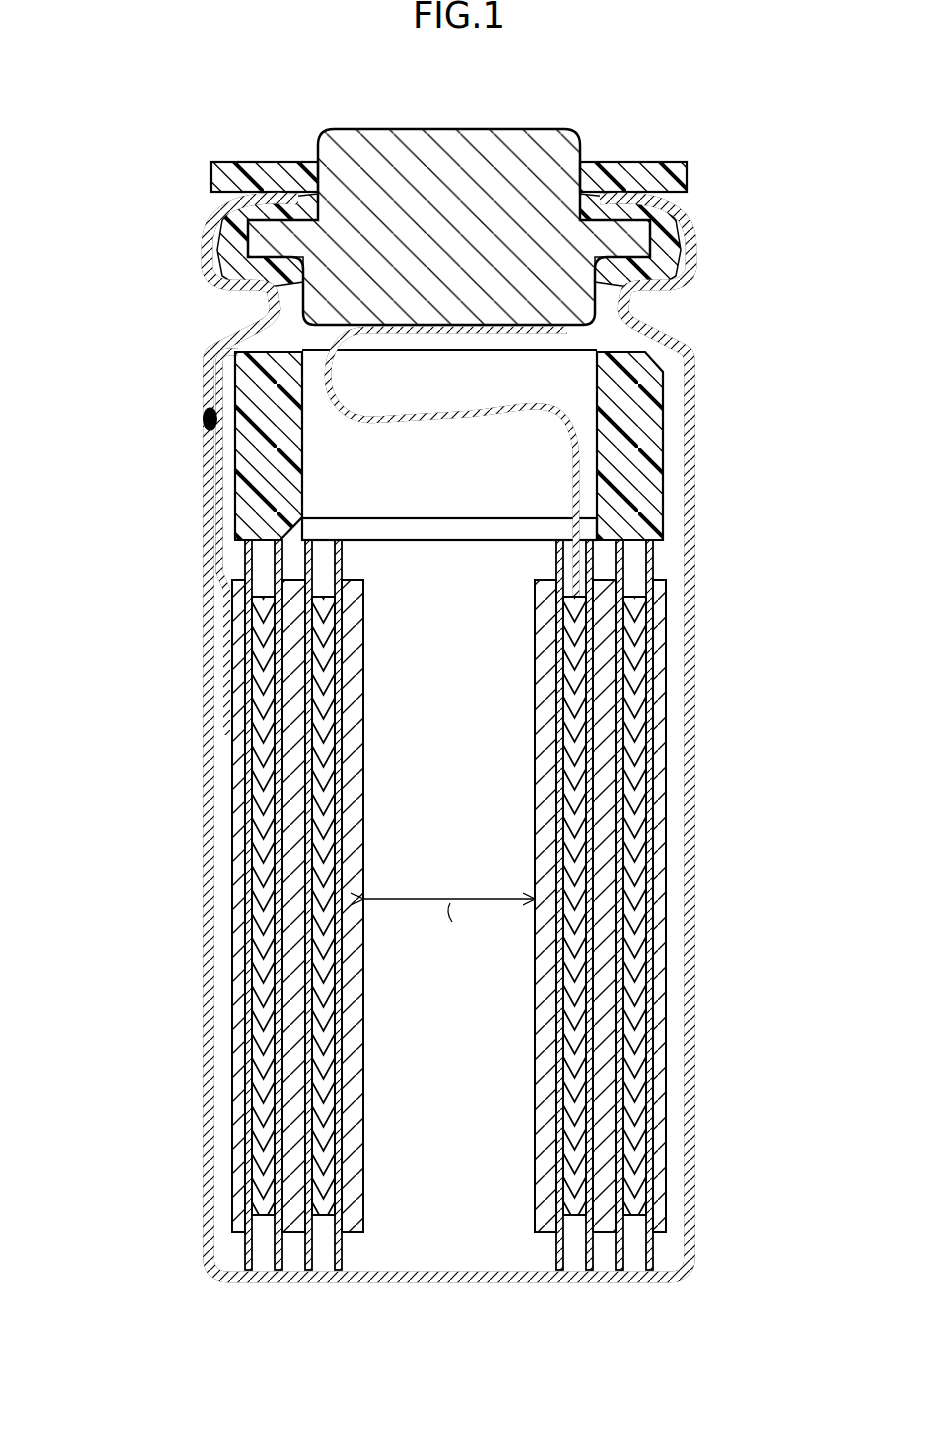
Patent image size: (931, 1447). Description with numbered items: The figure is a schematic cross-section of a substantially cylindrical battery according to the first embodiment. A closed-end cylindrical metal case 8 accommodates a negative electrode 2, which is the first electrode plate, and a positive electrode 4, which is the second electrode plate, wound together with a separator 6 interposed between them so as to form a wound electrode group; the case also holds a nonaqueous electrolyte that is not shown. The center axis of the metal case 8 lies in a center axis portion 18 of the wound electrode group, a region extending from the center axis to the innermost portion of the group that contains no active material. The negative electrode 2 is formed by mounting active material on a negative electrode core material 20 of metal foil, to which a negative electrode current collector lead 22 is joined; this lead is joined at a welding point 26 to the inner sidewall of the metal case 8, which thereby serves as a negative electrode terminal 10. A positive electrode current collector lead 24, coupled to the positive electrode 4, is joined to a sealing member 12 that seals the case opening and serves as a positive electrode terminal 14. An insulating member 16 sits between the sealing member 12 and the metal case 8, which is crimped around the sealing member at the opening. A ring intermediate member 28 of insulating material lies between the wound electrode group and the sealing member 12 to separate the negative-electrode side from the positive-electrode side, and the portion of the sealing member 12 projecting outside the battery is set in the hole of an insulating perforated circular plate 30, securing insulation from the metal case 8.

The negative electrode 2 is at (612, 746).
The positive electrode 4 is at (637, 855).
The separator 6 is at (446, 905).
The metal case 8 is at (690, 402).
The negative electrode terminal 10 is at (436, 703).
The sealing member 12 is at (477, 136).
The positive electrode terminal 14 is at (485, 181).
The insulating member 16 is at (673, 247).
The center axis portion 18 is at (448, 1233).
The negative electrode core material 20 is at (236, 830).
The negative electrode current collector lead 22 is at (222, 532).
The positive electrode current collector lead 24 is at (580, 487).
The welding point 26 is at (205, 420).
The ring intermediate member 28 is at (653, 453).
The perforated circular plate 30 is at (628, 163).